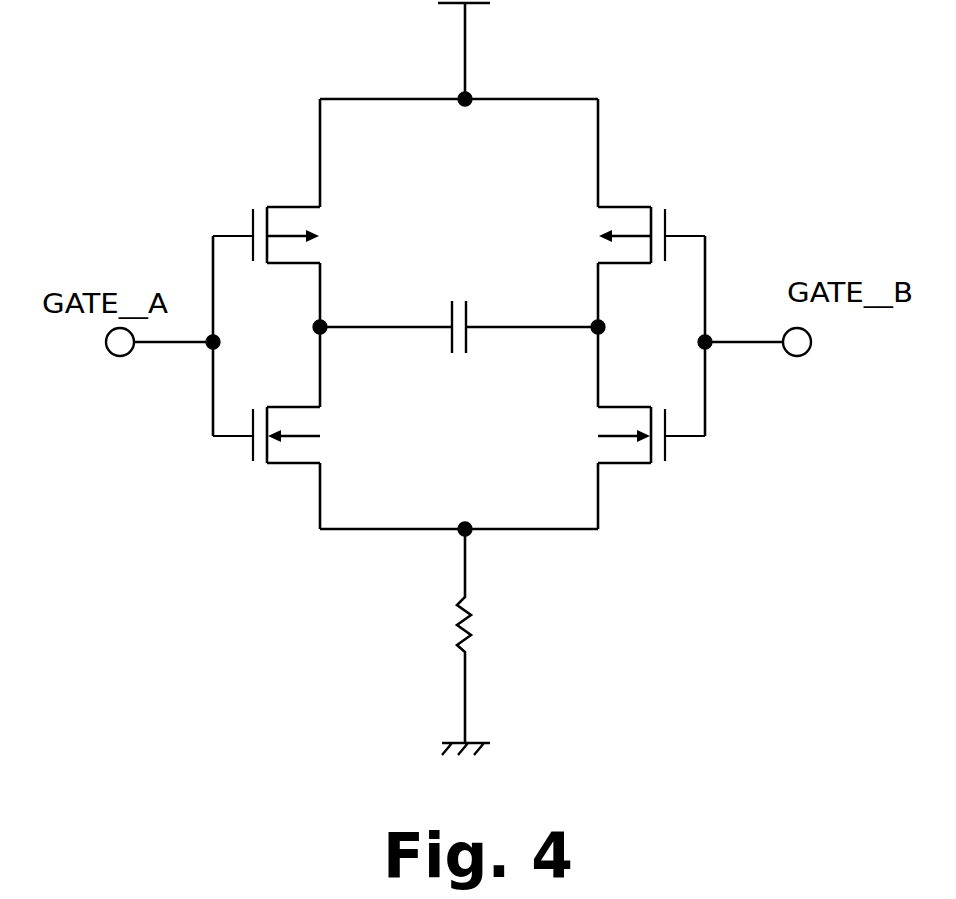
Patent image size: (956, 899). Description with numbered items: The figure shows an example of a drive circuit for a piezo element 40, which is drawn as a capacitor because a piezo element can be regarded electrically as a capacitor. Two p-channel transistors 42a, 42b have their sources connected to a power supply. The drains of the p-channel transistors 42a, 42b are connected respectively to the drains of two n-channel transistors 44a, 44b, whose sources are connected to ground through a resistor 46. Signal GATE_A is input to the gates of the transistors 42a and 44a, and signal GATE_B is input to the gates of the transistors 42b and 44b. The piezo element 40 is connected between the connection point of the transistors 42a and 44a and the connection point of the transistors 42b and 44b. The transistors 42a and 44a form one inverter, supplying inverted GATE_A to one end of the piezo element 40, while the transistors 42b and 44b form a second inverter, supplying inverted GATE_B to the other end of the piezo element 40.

The piezo element 40 is at (459, 301).
The p-channel transistor 42a is at (266, 211).
The p-channel transistor 42b is at (651, 210).
The n-channel transistor 44a is at (266, 411).
The n-channel transistor 44b is at (651, 416).
The resistor 46 is at (491, 642).